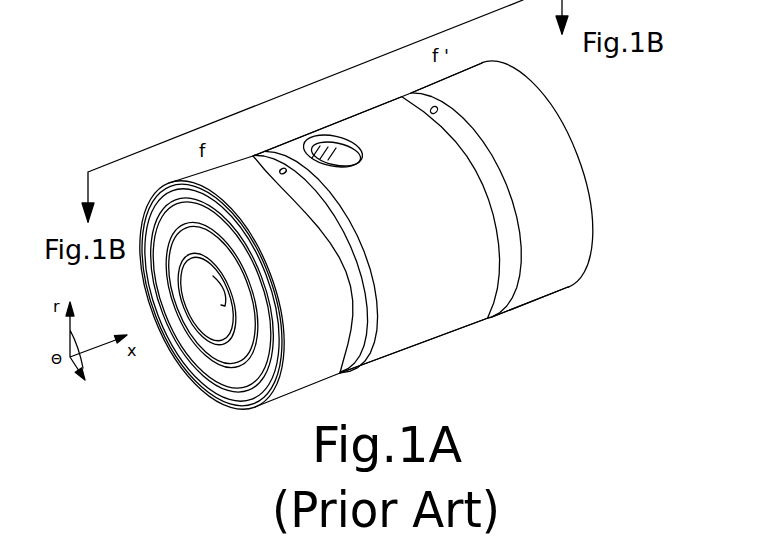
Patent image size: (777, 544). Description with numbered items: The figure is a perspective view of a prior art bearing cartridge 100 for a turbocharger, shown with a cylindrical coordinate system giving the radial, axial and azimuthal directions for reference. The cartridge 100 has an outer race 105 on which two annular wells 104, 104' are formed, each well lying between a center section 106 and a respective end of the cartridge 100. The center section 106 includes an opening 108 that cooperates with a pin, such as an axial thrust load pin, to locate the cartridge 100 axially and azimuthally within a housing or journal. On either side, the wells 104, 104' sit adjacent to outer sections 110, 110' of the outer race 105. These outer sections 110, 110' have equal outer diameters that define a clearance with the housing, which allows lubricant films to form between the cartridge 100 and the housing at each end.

The bearing cartridge 100 is at (194, 105).
The annular well 104 is at (337, 280).
The annular well 104' is at (484, 224).
The outer race 105 is at (268, 404).
The center section 106 is at (413, 325).
The opening 108 is at (352, 163).
The outer section 110 is at (212, 281).
The outer section 110' is at (504, 189).